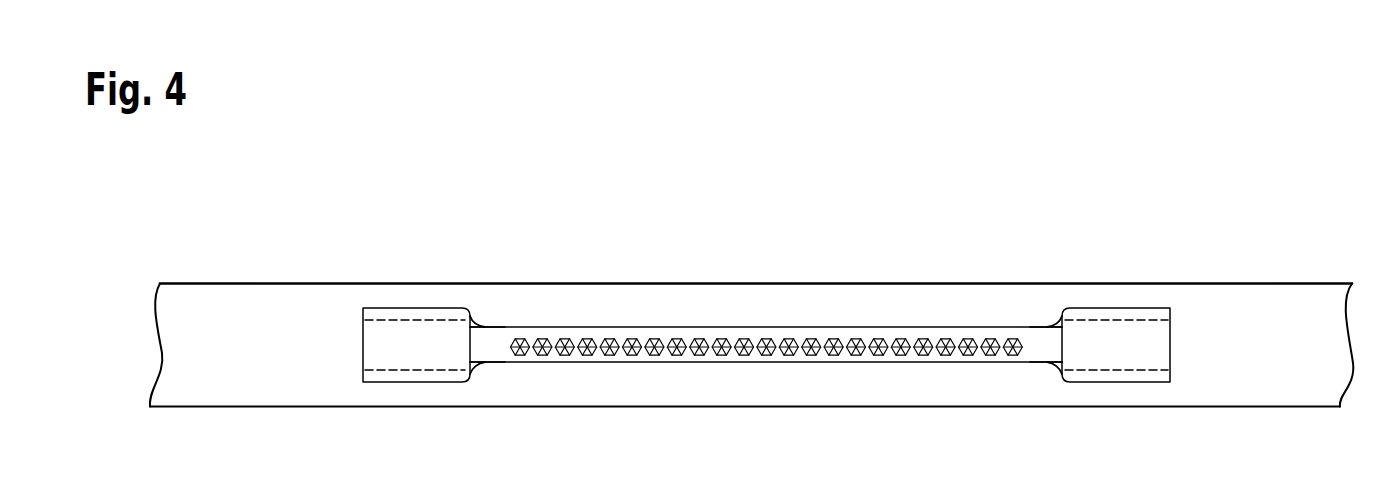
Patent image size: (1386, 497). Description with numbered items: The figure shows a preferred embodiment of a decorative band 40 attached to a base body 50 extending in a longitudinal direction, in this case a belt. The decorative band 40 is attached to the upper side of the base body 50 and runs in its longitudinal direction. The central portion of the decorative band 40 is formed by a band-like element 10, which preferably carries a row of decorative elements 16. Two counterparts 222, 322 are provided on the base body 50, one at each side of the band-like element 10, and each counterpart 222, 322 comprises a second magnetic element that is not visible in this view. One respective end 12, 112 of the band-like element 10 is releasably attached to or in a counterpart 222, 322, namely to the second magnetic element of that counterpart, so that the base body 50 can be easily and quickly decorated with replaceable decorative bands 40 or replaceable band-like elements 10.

The band-like element 10 is at (757, 303).
The end of the band-like element 12 is at (1050, 348).
The decorative elements 16 is at (633, 327).
The decorative band 40 is at (496, 302).
The base body 50 is at (930, 262).
The end of the band-like element 112 is at (482, 347).
The counterpart 222 is at (1146, 286).
The counterpart 322 is at (389, 286).